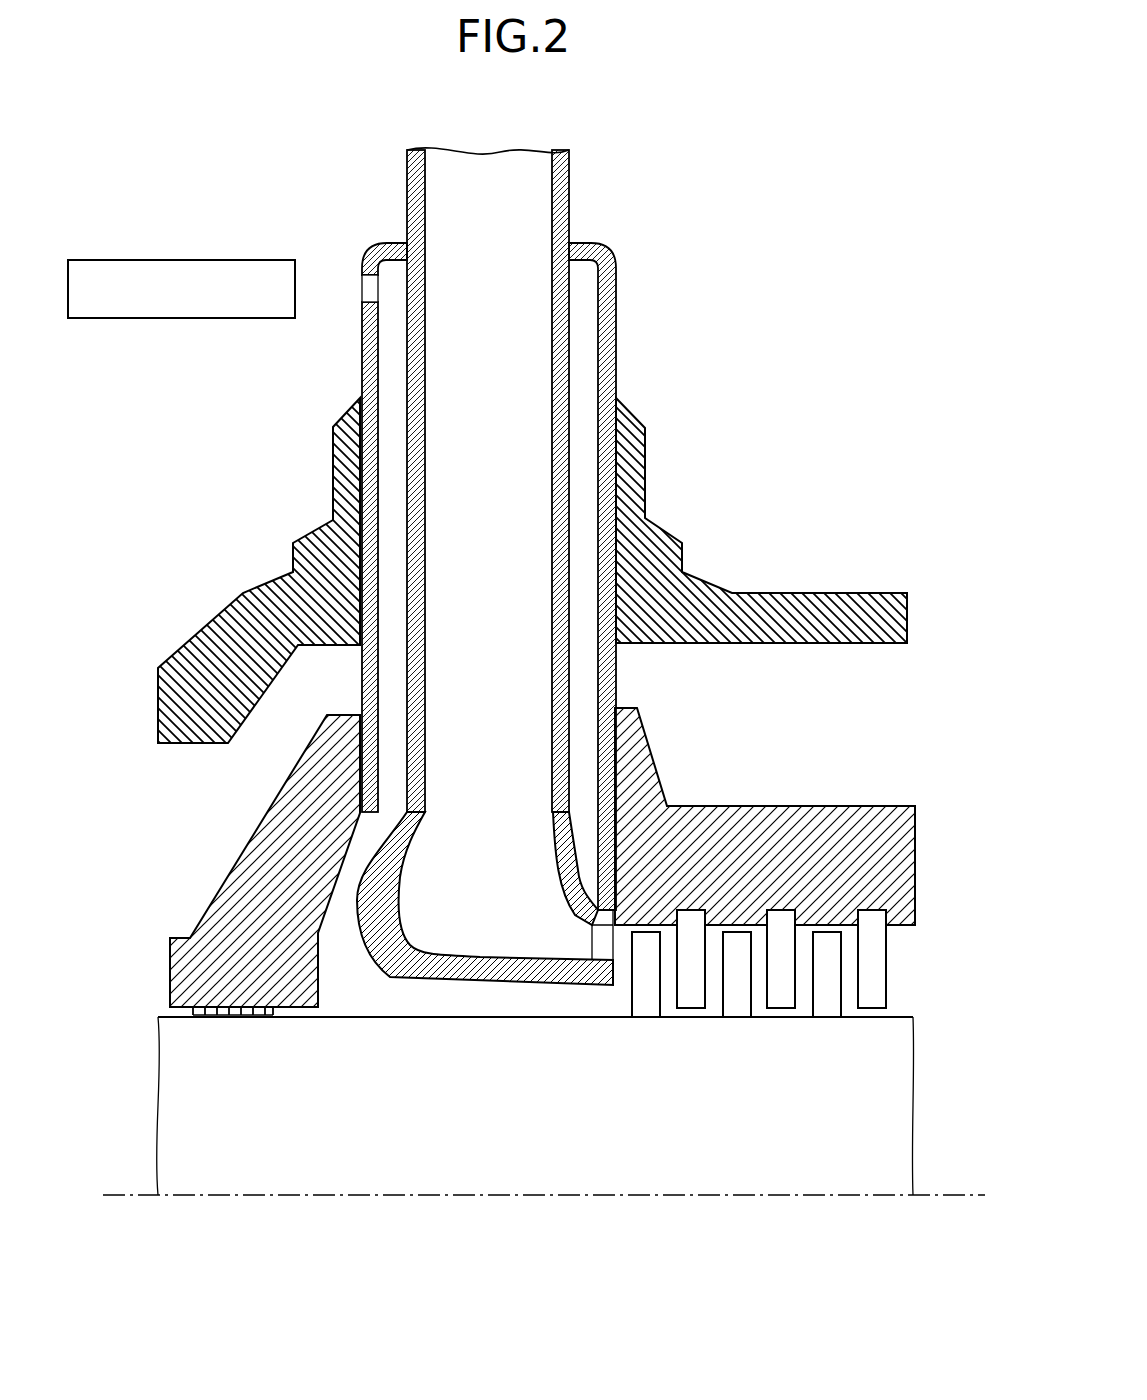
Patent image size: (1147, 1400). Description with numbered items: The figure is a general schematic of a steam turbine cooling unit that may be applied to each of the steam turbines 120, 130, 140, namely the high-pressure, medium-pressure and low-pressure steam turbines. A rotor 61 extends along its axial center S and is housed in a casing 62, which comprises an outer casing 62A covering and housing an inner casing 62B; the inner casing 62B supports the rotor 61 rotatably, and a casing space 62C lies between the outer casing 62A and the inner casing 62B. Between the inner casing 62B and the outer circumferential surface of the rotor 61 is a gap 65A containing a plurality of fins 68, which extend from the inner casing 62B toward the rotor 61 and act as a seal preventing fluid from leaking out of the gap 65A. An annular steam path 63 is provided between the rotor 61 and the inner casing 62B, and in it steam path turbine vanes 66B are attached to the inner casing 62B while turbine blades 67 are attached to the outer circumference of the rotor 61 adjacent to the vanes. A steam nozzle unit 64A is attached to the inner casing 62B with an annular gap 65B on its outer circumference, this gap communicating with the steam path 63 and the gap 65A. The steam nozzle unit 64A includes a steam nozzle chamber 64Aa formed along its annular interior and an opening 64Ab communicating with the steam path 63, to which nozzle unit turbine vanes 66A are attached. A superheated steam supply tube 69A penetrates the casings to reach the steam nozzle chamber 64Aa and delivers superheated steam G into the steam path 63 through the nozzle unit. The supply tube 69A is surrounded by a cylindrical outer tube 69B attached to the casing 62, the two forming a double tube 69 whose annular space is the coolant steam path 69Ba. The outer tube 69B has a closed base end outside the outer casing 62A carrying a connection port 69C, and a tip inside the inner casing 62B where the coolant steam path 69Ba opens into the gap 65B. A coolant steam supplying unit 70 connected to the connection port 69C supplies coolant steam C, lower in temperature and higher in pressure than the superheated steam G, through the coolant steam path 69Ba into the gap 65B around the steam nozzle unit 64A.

The rotor 61 is at (195, 1093).
The casing 62 is at (491, 702).
The outer casing 62A is at (222, 640).
The inner casing 62B is at (205, 938).
The casing space 62C is at (803, 675).
The steam path 63 is at (760, 1008).
The steam nozzle unit 64A is at (617, 930).
The steam nozzle chamber 64Aa is at (570, 842).
The opening 64Ab is at (603, 950).
The gap 65A is at (293, 1017).
The gap 65B is at (518, 1002).
The nozzle unit turbine vanes 66A is at (603, 980).
The steam path turbine vanes 66B is at (875, 966).
The turbine blades 67 is at (647, 1002).
The fins 68 is at (195, 1010).
The double tube 69 is at (580, 194).
The superheated steam supply tube 69A is at (560, 305).
The outer tube 69B is at (605, 308).
The coolant steam path 69Ba is at (393, 512).
The connection port 69C is at (362, 280).
The coolant steam supplying unit 70 is at (120, 262).
The high-pressure steam turbine 120 is at (783, 478).
The medium-pressure steam turbine 130 is at (783, 478).
The low-pressure steam turbine 140 is at (783, 478).
The superheated steam G is at (488, 88).
The coolant steam C is at (392, 466).
The axial center S is at (200, 1197).